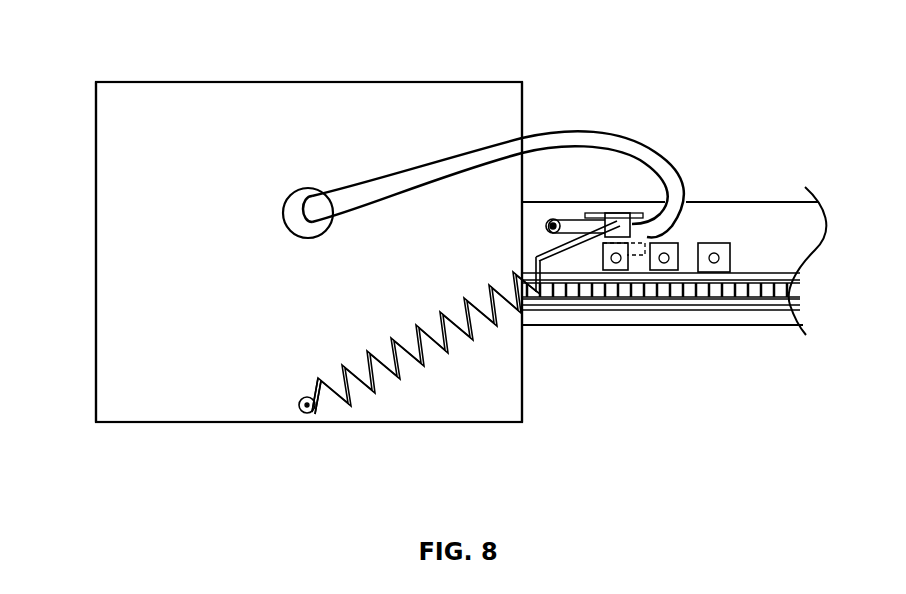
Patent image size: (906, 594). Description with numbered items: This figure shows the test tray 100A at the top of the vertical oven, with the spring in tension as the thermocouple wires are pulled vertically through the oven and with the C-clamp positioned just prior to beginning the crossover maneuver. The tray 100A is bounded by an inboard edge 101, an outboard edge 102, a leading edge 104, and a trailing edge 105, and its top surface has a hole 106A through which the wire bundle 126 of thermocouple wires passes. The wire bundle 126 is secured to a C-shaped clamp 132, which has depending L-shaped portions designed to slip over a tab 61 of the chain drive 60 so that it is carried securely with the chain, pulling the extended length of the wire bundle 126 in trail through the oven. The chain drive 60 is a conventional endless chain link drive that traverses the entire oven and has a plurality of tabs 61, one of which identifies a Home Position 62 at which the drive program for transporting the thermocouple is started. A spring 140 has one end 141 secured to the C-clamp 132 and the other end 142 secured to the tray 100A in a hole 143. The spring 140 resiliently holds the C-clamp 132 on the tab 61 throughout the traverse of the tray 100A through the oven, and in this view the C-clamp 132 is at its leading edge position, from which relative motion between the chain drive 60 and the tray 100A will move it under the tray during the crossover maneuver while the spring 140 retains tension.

The tray 100A is at (96, 422).
The inboard edge 101 is at (163, 422).
The outboard edge 102 is at (187, 82).
The leading edge 104 is at (522, 82).
The trailing edge 105 is at (96, 107).
The hole 106A is at (303, 188).
The wire bundle 126 is at (608, 148).
The C-shaped clamp 132 is at (627, 222).
The spring end 141 is at (558, 248).
The tab 61 is at (618, 272).
The Home Position 62 is at (652, 248).
The chain drive 60 is at (742, 292).
The spring 140 is at (452, 347).
The spring end 142 is at (328, 418).
The hole 143 is at (298, 410).